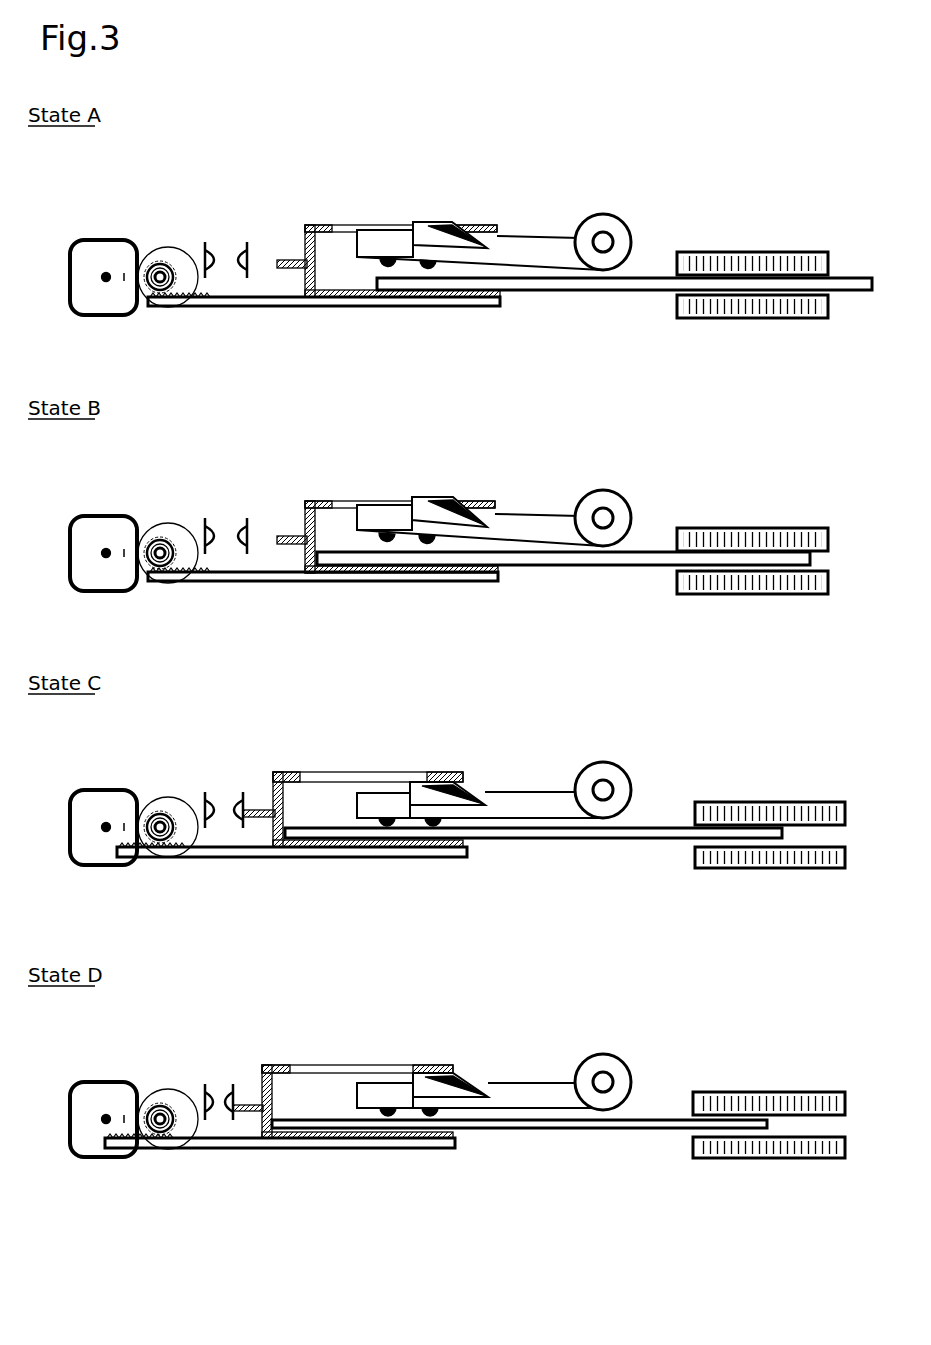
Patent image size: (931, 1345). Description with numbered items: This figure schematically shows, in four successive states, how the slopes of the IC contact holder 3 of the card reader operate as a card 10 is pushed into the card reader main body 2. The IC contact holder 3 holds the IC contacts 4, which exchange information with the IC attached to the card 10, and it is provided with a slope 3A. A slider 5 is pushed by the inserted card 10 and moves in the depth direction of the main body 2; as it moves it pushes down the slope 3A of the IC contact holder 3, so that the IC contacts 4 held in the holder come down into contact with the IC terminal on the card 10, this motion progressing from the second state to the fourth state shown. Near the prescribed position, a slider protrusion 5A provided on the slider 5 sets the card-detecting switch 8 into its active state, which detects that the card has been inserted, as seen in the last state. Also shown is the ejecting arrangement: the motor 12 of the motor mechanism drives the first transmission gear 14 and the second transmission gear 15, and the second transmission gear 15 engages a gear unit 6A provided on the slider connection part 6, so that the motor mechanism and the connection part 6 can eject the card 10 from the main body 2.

The card reader main body 2 is at (722, 252).
The IC contact holder 3 is at (513, 237).
The slope 3A is at (427, 232).
The IC contact 4 is at (427, 268).
The slider 5 is at (315, 227).
The slider protrusion 5A is at (287, 260).
The slider connection part 6 is at (225, 302).
The gear unit 6A is at (172, 296).
The card-detecting switch 8 is at (233, 240).
The card 10 is at (662, 278).
The motor 12 is at (100, 248).
The first transmission gear 14 is at (148, 248).
The second transmission gear 15 is at (175, 263).